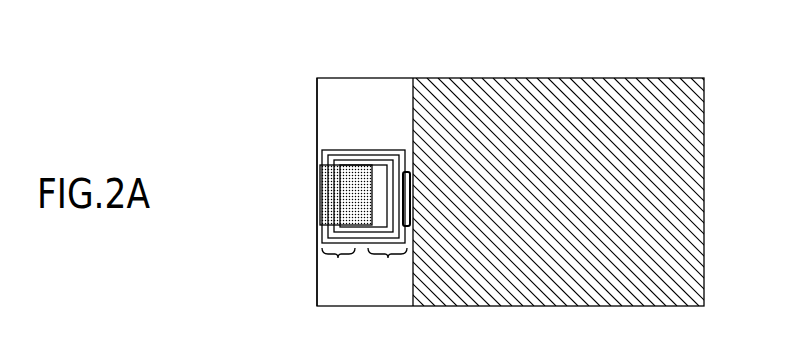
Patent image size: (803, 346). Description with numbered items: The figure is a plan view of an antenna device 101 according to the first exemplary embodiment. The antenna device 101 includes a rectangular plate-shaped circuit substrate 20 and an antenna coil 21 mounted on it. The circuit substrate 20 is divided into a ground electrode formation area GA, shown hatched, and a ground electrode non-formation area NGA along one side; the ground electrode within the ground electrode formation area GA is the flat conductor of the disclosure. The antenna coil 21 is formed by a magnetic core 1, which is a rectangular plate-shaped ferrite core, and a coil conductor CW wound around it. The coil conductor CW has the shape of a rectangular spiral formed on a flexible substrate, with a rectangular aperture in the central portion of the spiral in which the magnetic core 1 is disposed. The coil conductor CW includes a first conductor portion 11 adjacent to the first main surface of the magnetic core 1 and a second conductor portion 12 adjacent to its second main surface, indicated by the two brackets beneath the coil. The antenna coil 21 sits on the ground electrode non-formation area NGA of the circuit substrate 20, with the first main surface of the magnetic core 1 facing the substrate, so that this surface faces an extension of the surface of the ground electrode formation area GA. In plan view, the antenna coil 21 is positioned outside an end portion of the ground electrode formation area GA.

The antenna device 101 is at (766, 66).
The circuit substrate 20 is at (317, 78).
The antenna coil 21 is at (304, 128).
The ground electrode non-formation area NGA is at (349, 102).
The ground electrode formation area GA is at (626, 94).
The coil conductor CW is at (370, 149).
The magnetic core 1 is at (320, 196).
The first conductor portion 11 is at (338, 270).
The second conductor portion 12 is at (387, 270).